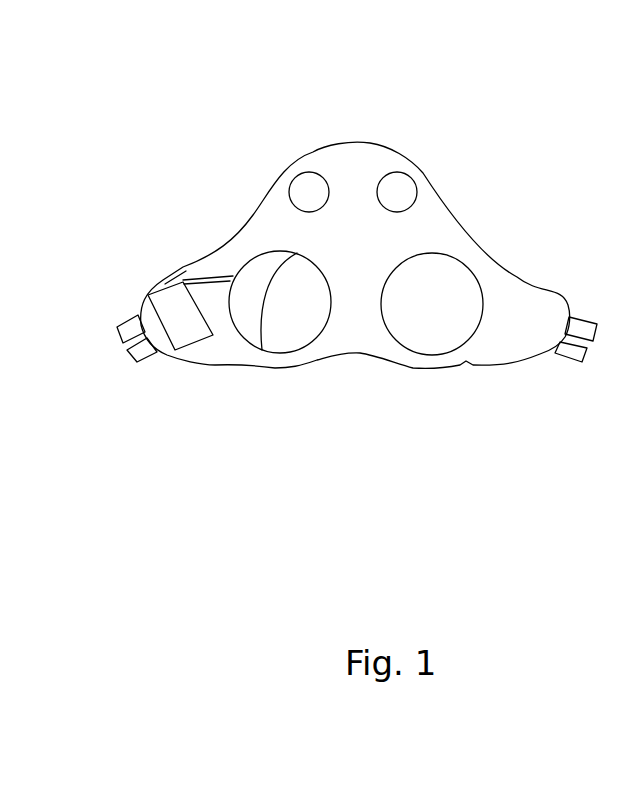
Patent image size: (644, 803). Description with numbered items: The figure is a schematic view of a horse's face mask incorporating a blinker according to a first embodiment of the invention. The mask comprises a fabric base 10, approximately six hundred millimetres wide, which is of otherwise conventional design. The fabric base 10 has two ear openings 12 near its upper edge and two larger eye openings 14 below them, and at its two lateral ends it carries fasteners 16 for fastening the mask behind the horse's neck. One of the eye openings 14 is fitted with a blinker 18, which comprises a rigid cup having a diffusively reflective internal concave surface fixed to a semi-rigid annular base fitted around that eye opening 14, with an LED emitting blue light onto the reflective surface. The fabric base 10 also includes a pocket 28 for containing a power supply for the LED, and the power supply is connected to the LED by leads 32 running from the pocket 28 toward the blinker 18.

The fabric base 10 is at (427, 228).
The ear openings 12 is at (402, 183).
The eye openings 14 is at (417, 333).
The fasteners 16 is at (120, 328).
The blinker 18 is at (256, 330).
The pocket 28 is at (180, 337).
The leads 32 is at (212, 275).